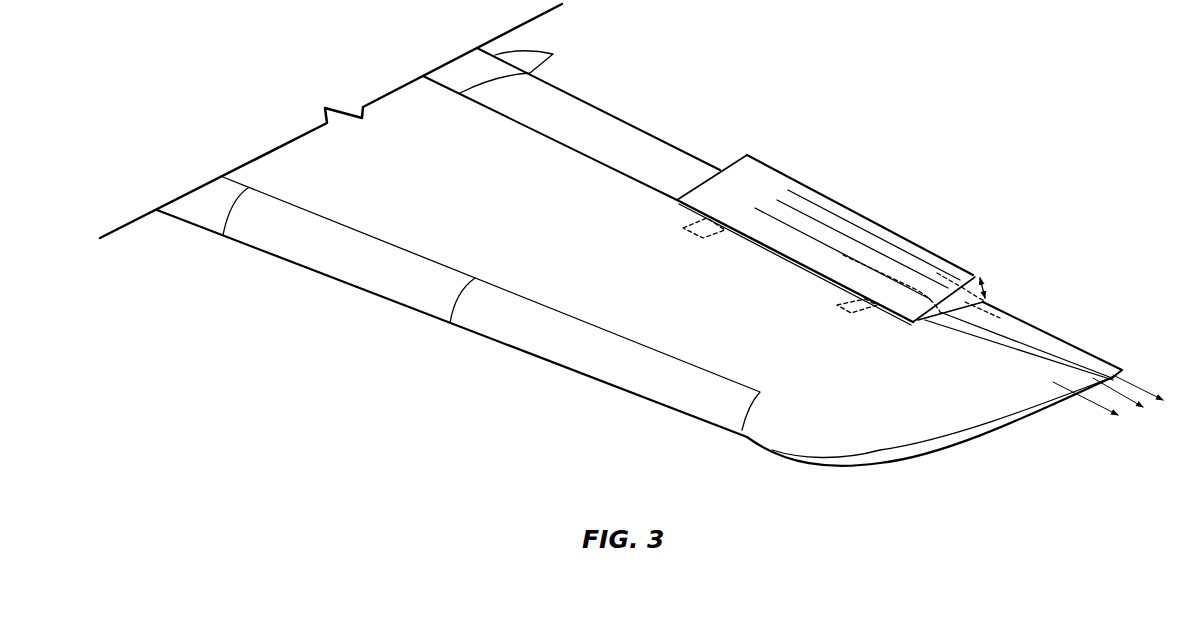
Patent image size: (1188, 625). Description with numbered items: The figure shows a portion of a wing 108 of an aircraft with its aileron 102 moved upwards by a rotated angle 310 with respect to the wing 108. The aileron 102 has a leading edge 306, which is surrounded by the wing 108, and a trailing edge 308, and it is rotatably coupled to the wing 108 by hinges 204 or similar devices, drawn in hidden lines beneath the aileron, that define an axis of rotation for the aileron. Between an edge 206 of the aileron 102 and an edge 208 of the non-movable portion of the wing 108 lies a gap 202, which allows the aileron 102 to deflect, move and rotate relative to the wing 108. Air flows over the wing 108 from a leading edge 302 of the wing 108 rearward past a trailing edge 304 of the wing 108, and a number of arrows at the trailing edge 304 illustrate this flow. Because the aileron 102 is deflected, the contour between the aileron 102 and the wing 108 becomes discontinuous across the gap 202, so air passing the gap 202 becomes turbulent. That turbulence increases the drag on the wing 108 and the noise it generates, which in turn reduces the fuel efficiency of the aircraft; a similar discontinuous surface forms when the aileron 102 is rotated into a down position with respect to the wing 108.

The aileron 102 is at (838, 240).
The wing 108 is at (425, 100).
The gap 202 is at (975, 276).
The hinges 204 is at (683, 228).
The edge of aileron 206 is at (727, 164).
The edge of non-movable portion of wing 208 is at (930, 322).
The leading edge of wing 302 is at (620, 390).
The trailing edge of wing 304 is at (1087, 351).
The leading edge of aileron 306 is at (770, 250).
The trailing edge of aileron 308 is at (817, 190).
The rotated angle 310 is at (988, 283).